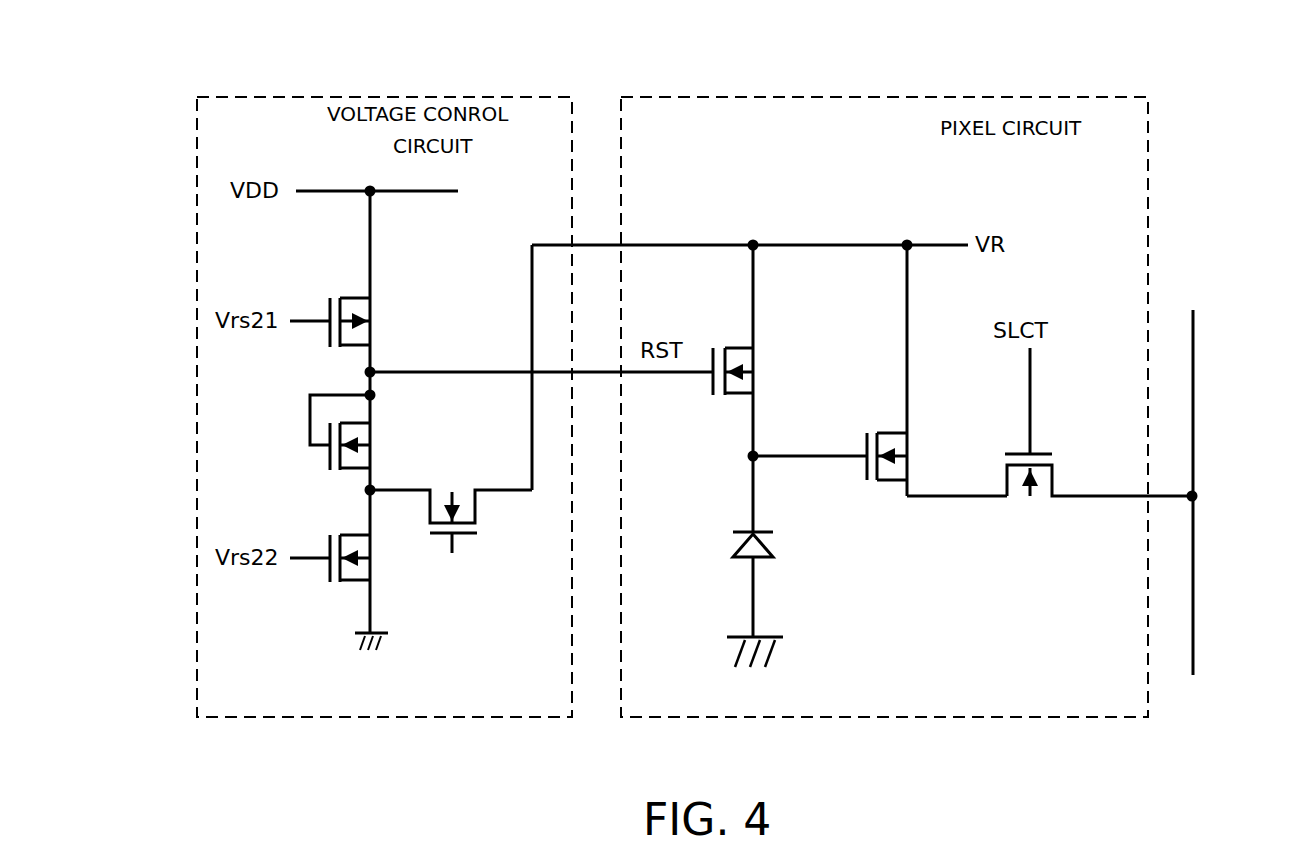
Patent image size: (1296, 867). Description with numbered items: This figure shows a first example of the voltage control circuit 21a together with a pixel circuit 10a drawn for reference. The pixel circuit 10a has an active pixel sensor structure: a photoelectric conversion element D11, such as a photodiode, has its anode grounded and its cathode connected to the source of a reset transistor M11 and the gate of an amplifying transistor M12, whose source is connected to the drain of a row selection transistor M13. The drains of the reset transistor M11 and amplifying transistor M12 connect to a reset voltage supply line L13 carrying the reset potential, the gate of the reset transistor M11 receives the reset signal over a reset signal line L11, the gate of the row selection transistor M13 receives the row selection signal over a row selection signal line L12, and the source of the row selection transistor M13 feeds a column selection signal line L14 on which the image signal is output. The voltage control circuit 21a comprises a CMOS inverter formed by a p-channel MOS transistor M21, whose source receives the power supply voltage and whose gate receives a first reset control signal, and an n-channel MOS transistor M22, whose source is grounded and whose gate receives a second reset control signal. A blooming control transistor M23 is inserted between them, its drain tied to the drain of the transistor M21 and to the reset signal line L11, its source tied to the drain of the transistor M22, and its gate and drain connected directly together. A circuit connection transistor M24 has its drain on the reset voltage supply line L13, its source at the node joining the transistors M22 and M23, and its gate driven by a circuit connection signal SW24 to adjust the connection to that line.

The voltage control circuit 21a is at (473, 97).
The pixel circuit 10a is at (1040, 97).
The p-channel MOS transistor M21 is at (325, 300).
The n-channel MOS transistor M22 is at (352, 597).
The blooming control transistor M23 is at (320, 462).
The circuit connection transistor M24 is at (483, 517).
The circuit connection signal SW24 is at (451, 537).
The reset signal line L11 is at (485, 375).
The row selection signal line L12 is at (1030, 412).
The reset voltage supply line L13 is at (845, 243).
The column selection signal line L14 is at (1195, 337).
The reset transistor M11 is at (732, 400).
The amplifying transistor M12 is at (893, 490).
The row selection transistor M13 is at (1015, 510).
The photoelectric conversion element D11 is at (728, 545).